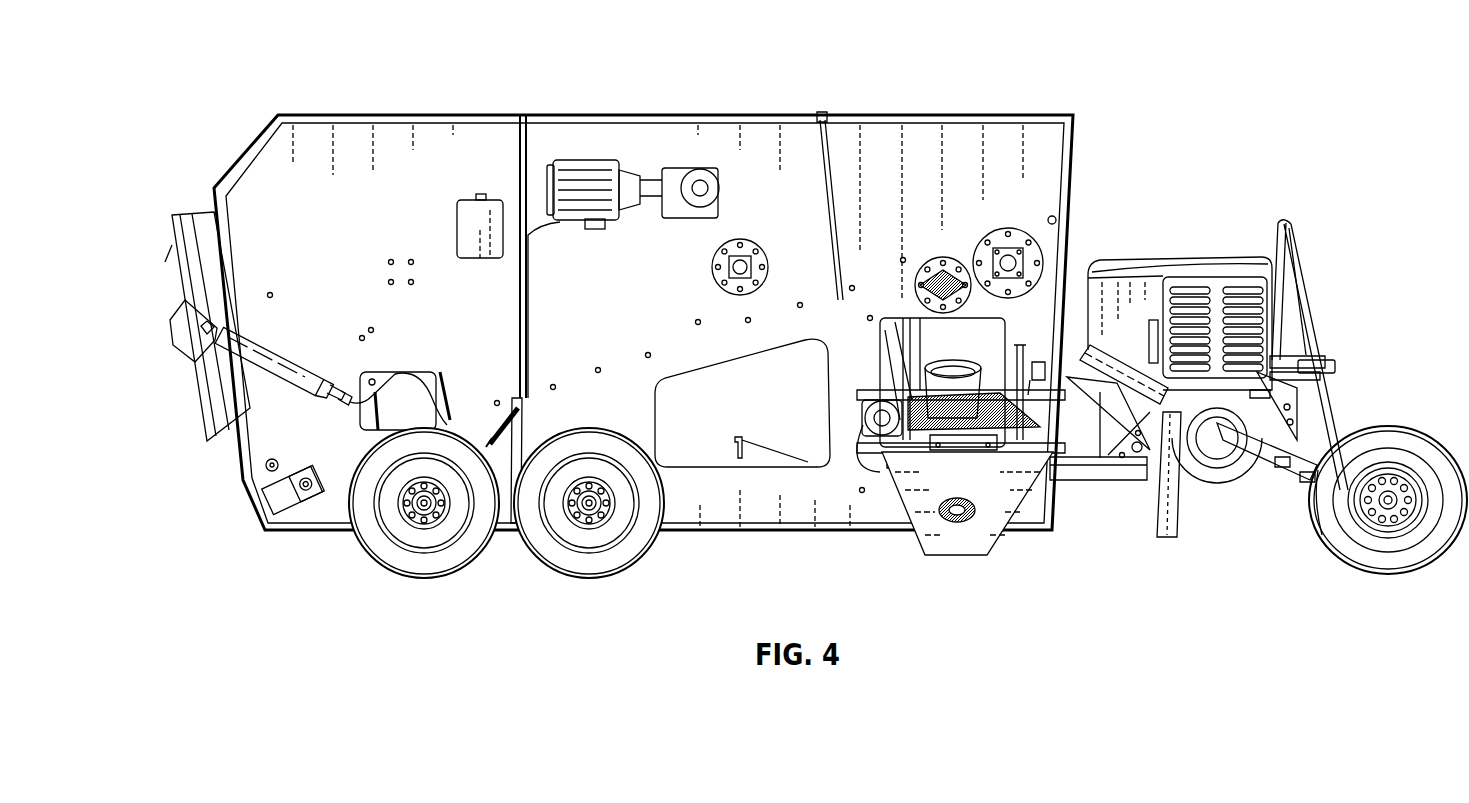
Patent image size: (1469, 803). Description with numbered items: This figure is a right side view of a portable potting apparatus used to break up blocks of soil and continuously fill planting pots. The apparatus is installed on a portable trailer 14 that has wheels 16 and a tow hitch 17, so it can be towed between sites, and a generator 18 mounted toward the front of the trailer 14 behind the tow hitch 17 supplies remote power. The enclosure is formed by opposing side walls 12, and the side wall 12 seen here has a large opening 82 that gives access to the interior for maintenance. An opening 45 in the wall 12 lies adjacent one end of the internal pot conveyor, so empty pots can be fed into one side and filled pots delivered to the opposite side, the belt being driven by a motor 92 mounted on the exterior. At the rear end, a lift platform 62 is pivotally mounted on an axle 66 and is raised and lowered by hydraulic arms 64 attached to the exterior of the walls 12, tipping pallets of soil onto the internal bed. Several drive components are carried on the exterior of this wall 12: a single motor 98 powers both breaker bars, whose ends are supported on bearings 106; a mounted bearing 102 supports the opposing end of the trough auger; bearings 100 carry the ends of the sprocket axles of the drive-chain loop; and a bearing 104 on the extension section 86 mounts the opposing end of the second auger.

The side wall 12 is at (382, 232).
The portable trailer 14 is at (1100, 470).
The wheels 16 is at (430, 578).
The tow hitch 17 is at (1313, 312).
The generator 18 is at (1185, 258).
The opening 45 is at (980, 335).
The lift platform 62 is at (172, 240).
The hydraulic arms 64 is at (268, 360).
The axle 66 is at (265, 470).
The large opening 82 is at (694, 402).
The extension section 86 is at (913, 540).
The motor 92 is at (862, 412).
The motor 98 is at (603, 165).
The bearings 100 is at (315, 520).
The mounted bearing 102 is at (943, 272).
The bearing 104 is at (960, 522).
The bearing 106 is at (746, 254).